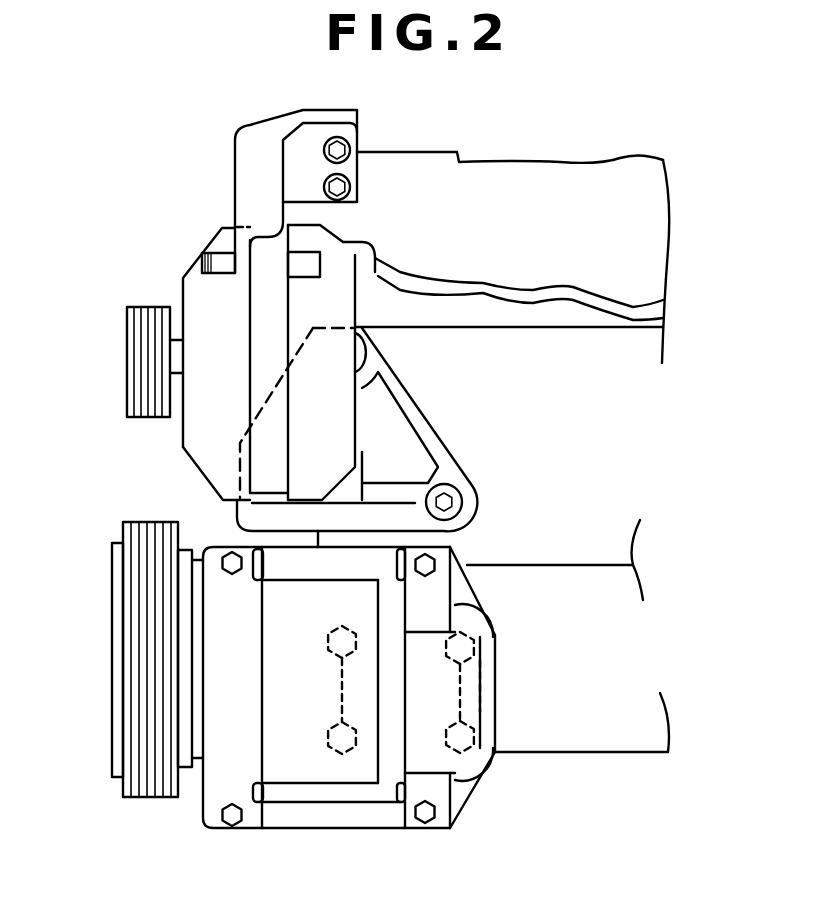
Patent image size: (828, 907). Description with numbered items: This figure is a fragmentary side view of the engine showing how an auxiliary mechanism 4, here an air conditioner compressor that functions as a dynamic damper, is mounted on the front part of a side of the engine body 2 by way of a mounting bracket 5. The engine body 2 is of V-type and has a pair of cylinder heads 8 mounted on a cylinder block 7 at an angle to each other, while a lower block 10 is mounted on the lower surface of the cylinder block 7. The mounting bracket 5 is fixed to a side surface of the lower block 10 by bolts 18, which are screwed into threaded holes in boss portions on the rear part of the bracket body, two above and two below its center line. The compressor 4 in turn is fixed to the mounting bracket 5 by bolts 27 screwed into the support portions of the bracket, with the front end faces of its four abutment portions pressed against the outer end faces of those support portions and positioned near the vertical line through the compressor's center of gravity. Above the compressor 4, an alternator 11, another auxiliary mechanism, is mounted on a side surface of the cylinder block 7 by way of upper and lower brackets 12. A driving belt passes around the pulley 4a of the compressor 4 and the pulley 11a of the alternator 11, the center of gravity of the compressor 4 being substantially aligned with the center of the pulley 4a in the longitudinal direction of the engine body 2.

The engine body 2 is at (535, 150).
The cylinder heads 8 is at (628, 192).
The alternator 11 is at (198, 288).
The pulley 11a is at (132, 357).
The upper and lower brackets 12 is at (255, 170).
The cylinder block 7 is at (580, 487).
The lower block 10 is at (615, 738).
The auxiliary mechanism 4 is at (236, 771).
The pulley 4a is at (133, 688).
The mounting bracket 5 is at (470, 801).
The bolts 18 is at (339, 693).
The bolts 27 is at (452, 545).